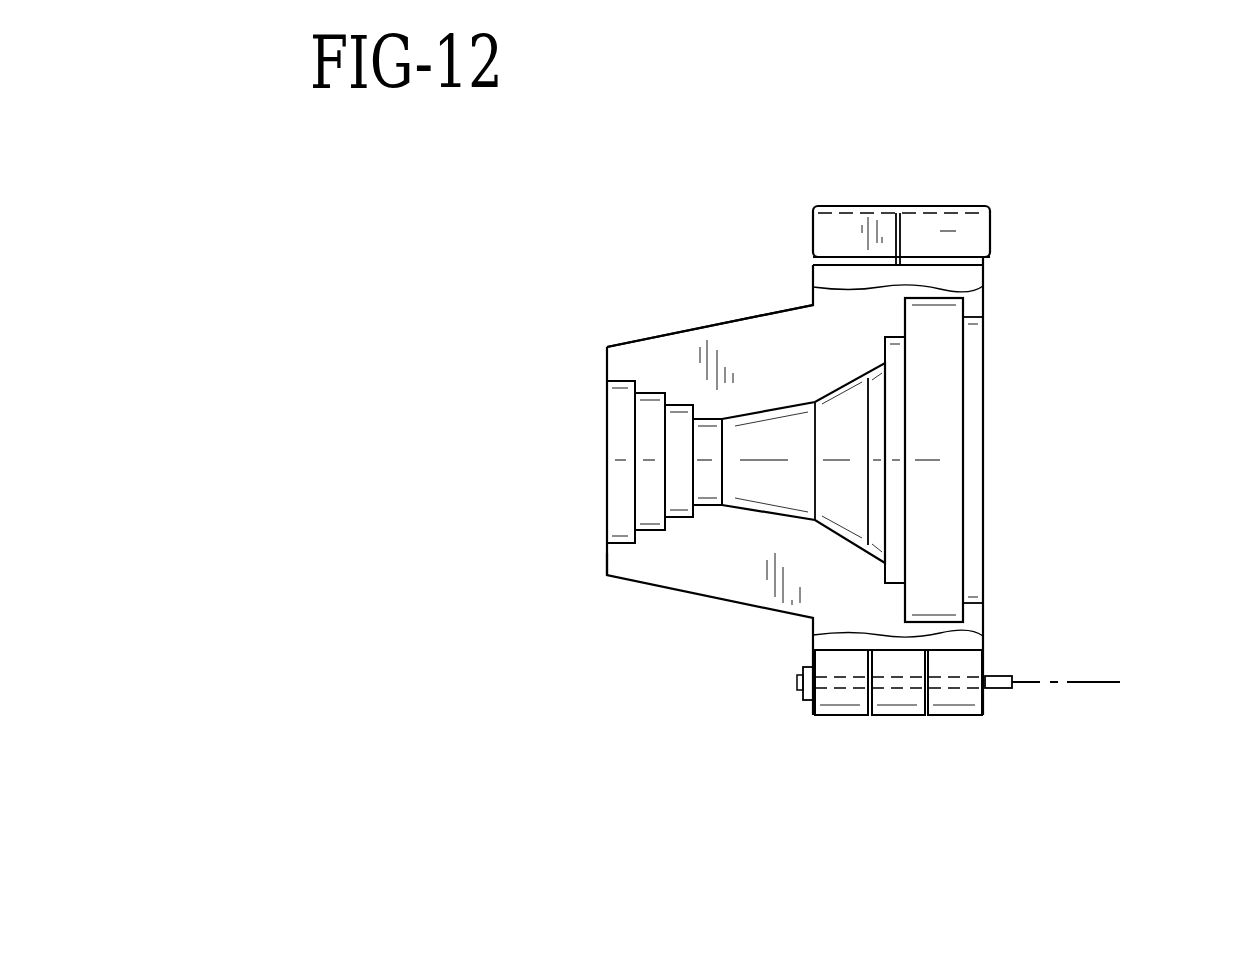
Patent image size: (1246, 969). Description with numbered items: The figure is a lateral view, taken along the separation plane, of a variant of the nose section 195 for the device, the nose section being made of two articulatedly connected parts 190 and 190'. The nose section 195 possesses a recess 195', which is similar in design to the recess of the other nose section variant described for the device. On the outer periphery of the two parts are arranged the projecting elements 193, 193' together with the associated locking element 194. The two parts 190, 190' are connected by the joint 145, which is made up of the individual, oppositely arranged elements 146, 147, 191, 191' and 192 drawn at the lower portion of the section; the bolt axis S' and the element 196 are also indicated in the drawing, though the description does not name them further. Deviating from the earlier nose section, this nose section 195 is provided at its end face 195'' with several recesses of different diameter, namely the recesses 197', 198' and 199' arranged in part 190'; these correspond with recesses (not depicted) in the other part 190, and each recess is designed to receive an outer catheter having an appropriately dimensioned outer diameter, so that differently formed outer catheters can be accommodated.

The part of the nose section 190 is at (822, 234).
The part of the nose section 190' is at (782, 474).
The projecting element 193 is at (794, 192).
The projecting element 193' is at (1020, 263).
The locking element 194 is at (988, 218).
The nose section 195 is at (613, 274).
The recess 195' is at (1010, 460).
The end face 195'' is at (542, 584).
The shaft neck 196 is at (713, 423).
The recess 197' is at (593, 460).
The recess 198' is at (571, 461).
The recess 199' is at (551, 446).
The joint 145 is at (785, 685).
The element of the joint 146 is at (797, 698).
The element of the joint 147 is at (990, 690).
The element of the joint 191 is at (830, 729).
The element of the joint 191' is at (970, 728).
The element of the joint 192 is at (902, 717).
The bolt axis S' is at (1115, 668).